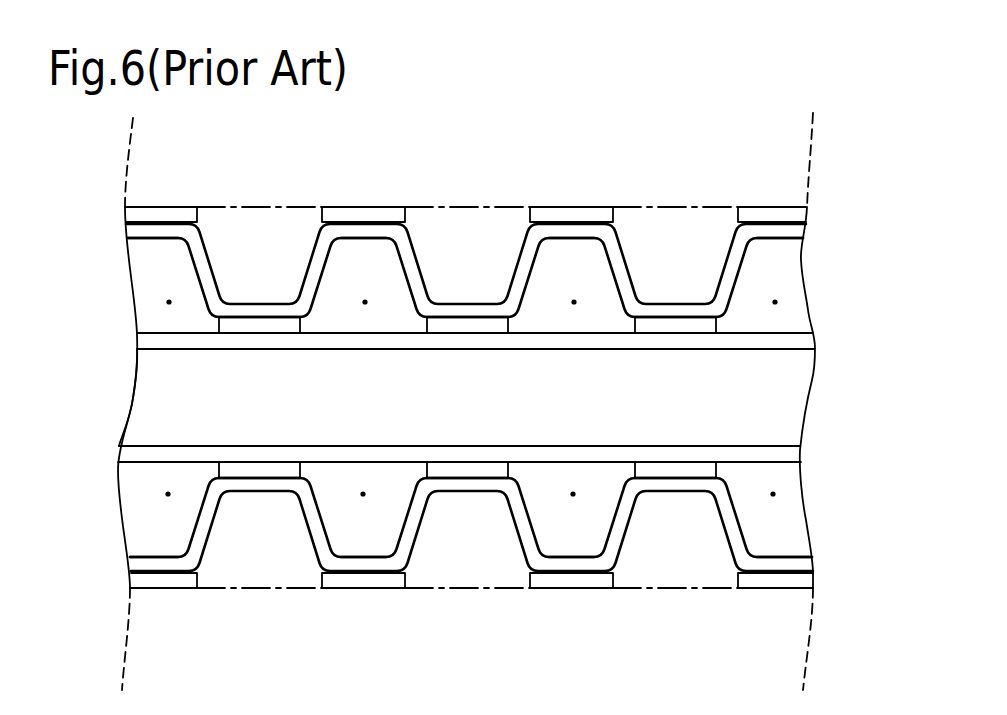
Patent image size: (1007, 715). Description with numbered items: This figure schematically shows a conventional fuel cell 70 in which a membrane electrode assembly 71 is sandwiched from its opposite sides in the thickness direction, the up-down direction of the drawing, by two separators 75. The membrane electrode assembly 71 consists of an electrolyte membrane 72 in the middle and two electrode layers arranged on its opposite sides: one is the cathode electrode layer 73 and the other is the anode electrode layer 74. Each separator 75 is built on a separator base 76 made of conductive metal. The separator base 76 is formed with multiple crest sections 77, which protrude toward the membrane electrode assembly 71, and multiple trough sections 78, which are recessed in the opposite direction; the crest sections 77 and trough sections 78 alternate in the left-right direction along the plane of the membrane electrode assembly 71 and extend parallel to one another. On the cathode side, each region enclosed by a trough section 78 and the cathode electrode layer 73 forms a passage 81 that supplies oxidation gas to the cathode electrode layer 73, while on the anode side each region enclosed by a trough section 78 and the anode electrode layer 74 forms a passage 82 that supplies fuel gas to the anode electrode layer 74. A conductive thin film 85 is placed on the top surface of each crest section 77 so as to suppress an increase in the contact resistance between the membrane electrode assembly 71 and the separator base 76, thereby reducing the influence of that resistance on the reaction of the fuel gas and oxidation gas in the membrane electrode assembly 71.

The fuel cell 70 is at (846, 163).
The membrane electrode assembly 71 is at (419, 399).
The electrolyte membrane 72 is at (135, 393).
The cathode electrode layer 73 is at (136, 340).
The anode electrode layer 74 is at (436, 449).
The separator 75 is at (816, 280).
The separator base 76 is at (799, 231).
The crest section 77 is at (273, 320).
The trough section 78 is at (160, 240).
The passage 81 is at (169, 302).
The passage 82 is at (168, 494).
The thin film 85 is at (239, 327).